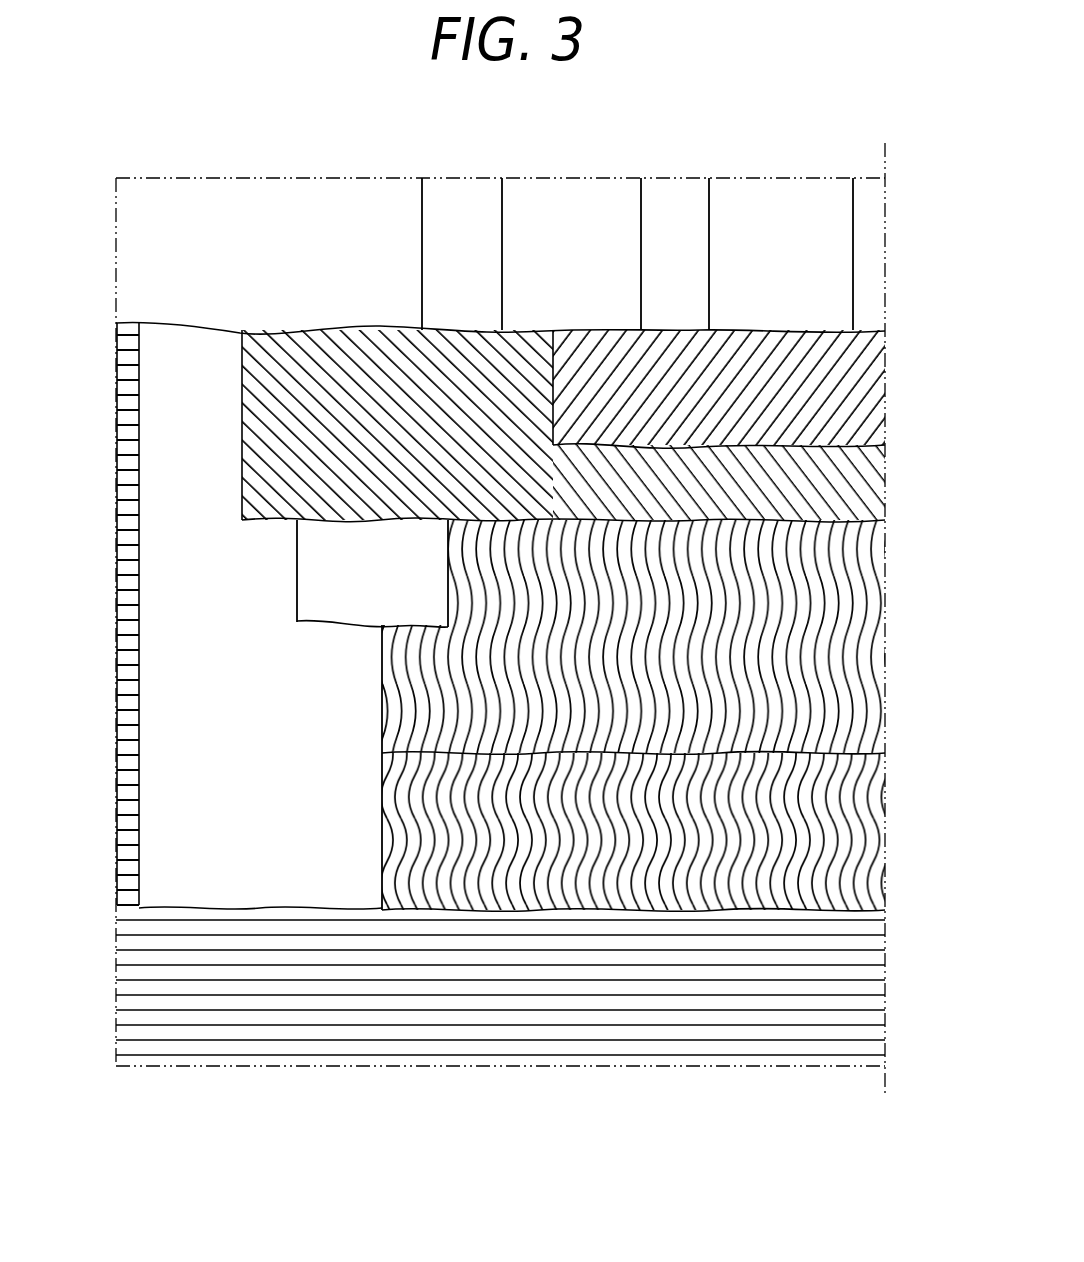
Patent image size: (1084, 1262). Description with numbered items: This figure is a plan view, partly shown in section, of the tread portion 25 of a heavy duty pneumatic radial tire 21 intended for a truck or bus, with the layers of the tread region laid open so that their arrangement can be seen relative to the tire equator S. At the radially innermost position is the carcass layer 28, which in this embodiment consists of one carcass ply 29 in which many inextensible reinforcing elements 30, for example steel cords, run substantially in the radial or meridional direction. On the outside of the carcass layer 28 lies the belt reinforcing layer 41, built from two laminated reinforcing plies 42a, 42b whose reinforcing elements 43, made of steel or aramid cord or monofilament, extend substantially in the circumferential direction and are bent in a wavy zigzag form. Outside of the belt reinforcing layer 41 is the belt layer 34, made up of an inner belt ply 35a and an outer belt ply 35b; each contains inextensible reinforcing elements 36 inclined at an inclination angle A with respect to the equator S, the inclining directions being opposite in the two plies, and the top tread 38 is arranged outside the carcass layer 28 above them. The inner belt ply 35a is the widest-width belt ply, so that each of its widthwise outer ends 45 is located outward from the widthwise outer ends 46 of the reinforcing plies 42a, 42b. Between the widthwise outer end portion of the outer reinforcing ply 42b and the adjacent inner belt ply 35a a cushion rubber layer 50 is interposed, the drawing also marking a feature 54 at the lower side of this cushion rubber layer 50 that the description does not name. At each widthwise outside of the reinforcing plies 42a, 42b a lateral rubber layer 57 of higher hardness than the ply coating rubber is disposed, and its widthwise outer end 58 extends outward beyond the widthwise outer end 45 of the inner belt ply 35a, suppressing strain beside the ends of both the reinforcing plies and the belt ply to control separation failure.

The heavy duty pneumatic radial tire 21 is at (320, 172).
The tread portion 25 is at (530, 215).
The carcass layer 28 is at (432, 1066).
The carcass ply 29 is at (515, 1030).
The inextensible reinforcing elements 30 is at (331, 1010).
The belt layer 34 is at (582, 330).
The inner belt ply 35a is at (375, 355).
The outer belt ply 35b is at (752, 358).
The inextensible reinforcing elements 36 is at (430, 355).
The top tread 38 is at (363, 200).
The belt reinforcing layer 41 is at (380, 753).
The reinforcing ply 42a is at (410, 851).
The outer reinforcing ply 42b is at (430, 712).
The reinforcing elements 43 is at (500, 603).
The widthwise outer end of inner belt ply 45 is at (242, 472).
The widthwise outer ends of reinforcing plies 46 is at (382, 660).
The cushion rubber layer 50 is at (318, 553).
The bottom face of spacer 54 is at (297, 600).
The lateral rubber layer 57 is at (192, 348).
The widthwise outer end of lateral rubber layer 58 is at (116, 375).
The inclination angle A is at (813, 383).
The equator S is at (886, 228).